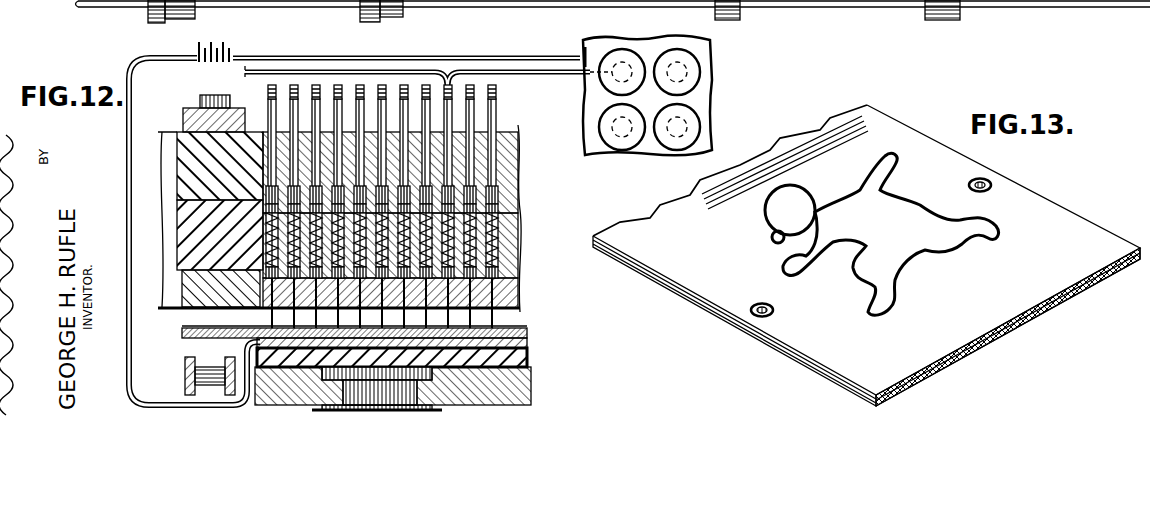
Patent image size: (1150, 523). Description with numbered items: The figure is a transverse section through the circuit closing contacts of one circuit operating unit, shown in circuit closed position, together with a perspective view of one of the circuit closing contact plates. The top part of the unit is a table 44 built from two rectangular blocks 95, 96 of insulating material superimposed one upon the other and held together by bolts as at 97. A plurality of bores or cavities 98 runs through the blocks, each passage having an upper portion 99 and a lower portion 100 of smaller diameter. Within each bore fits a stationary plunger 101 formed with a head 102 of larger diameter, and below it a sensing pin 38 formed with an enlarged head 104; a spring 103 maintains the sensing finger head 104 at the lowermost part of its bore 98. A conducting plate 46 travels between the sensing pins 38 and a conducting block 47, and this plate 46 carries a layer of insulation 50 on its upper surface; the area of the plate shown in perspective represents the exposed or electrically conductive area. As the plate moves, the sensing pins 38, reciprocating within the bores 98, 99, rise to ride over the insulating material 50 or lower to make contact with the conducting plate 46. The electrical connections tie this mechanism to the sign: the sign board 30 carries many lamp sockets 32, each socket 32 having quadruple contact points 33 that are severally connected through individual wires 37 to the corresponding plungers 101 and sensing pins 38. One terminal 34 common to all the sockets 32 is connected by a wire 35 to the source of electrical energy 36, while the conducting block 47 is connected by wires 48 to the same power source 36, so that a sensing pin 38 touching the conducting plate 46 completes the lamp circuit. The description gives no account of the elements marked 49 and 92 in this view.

In FIG. 12, the sign board 30 is at (705, 110).
In FIG. 12, the socket 32 is at (612, 55).
In FIG. 12, the contact point 33 is at (628, 60).
In FIG. 12, the terminal 34 is at (583, 46).
In FIG. 12, the wire 35 is at (313, 62).
In FIG. 12, the source of electrical energy 36 is at (234, 48).
In FIG. 12, the wire 37 is at (498, 91).
In FIG. 12, the sensing pin 38 is at (512, 301).
In FIG. 12, the table 44 is at (170, 130).
In FIG. 12, the conducting plate 46 is at (527, 333).
In FIG. 13, the conducting plate 46 is at (965, 180).
In FIG. 12, the conducting block 47 is at (530, 344).
In FIG. 12, the wire 48 is at (127, 194).
In FIG. 12, the base 49 is at (530, 367).
In FIG. 12, the layer of insulation 50 is at (490, 322).
In FIG. 13, the layer of insulation 50 is at (1032, 222).
In FIG. 12, the shaft 92 is at (150, 9).
In FIG. 12, the rectangular block 95 is at (197, 180).
In FIG. 12, the rectangular block 96 is at (188, 258).
In FIG. 12, the bolt 97 is at (207, 95).
In FIG. 12, the bore 98 is at (497, 241).
In FIG. 12, the upper portion of passage 99 is at (506, 152).
In FIG. 12, the lower portion of passage 100 is at (505, 273).
In FIG. 12, the plunger 101 is at (497, 118).
In FIG. 12, the head 102 is at (500, 192).
In FIG. 12, the spring 103 is at (510, 210).
In FIG. 12, the enlarged head 104 is at (508, 262).